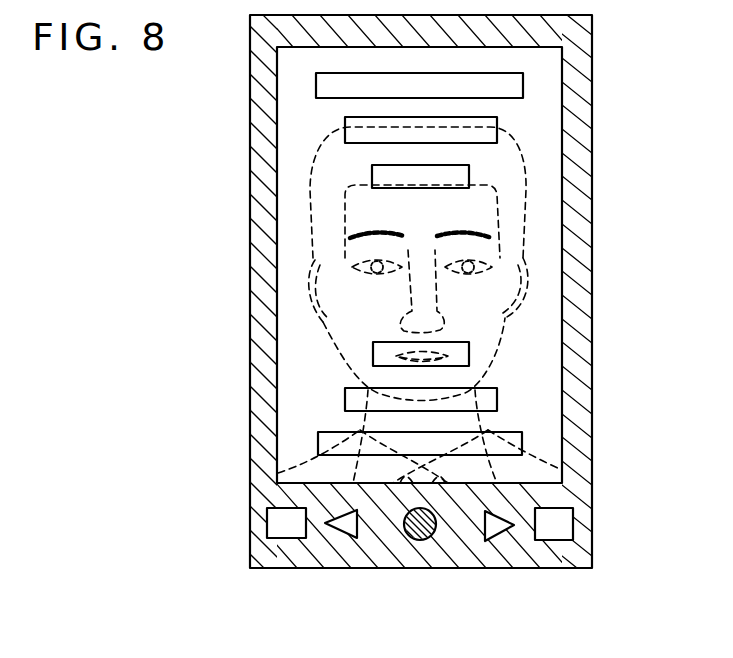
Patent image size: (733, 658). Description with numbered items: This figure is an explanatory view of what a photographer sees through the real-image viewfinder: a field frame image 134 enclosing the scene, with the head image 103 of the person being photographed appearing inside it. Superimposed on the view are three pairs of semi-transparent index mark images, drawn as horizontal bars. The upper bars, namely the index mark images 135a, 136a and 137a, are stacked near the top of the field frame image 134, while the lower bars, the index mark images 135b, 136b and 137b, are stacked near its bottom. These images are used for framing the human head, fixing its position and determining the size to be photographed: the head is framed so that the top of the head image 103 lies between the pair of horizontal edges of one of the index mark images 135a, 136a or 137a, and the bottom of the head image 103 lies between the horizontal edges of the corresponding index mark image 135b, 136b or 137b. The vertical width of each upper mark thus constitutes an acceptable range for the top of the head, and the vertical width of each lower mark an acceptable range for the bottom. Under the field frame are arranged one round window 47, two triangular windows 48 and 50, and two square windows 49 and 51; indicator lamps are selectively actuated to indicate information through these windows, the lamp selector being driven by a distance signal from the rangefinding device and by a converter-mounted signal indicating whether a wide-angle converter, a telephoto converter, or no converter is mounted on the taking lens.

The field frame image 134 is at (283, 157).
The head image 103 is at (508, 248).
The index mark image 135a is at (523, 86).
The index mark image 136a is at (497, 133).
The index mark image 137a is at (469, 177).
The index mark image 137b is at (469, 354).
The index mark image 136b is at (497, 400).
The index mark image 135b is at (522, 445).
The square window 49 is at (285, 542).
The triangular window 48 is at (345, 540).
The round window 47 is at (420, 541).
The triangular window 50 is at (502, 544).
The square window 51 is at (573, 522).